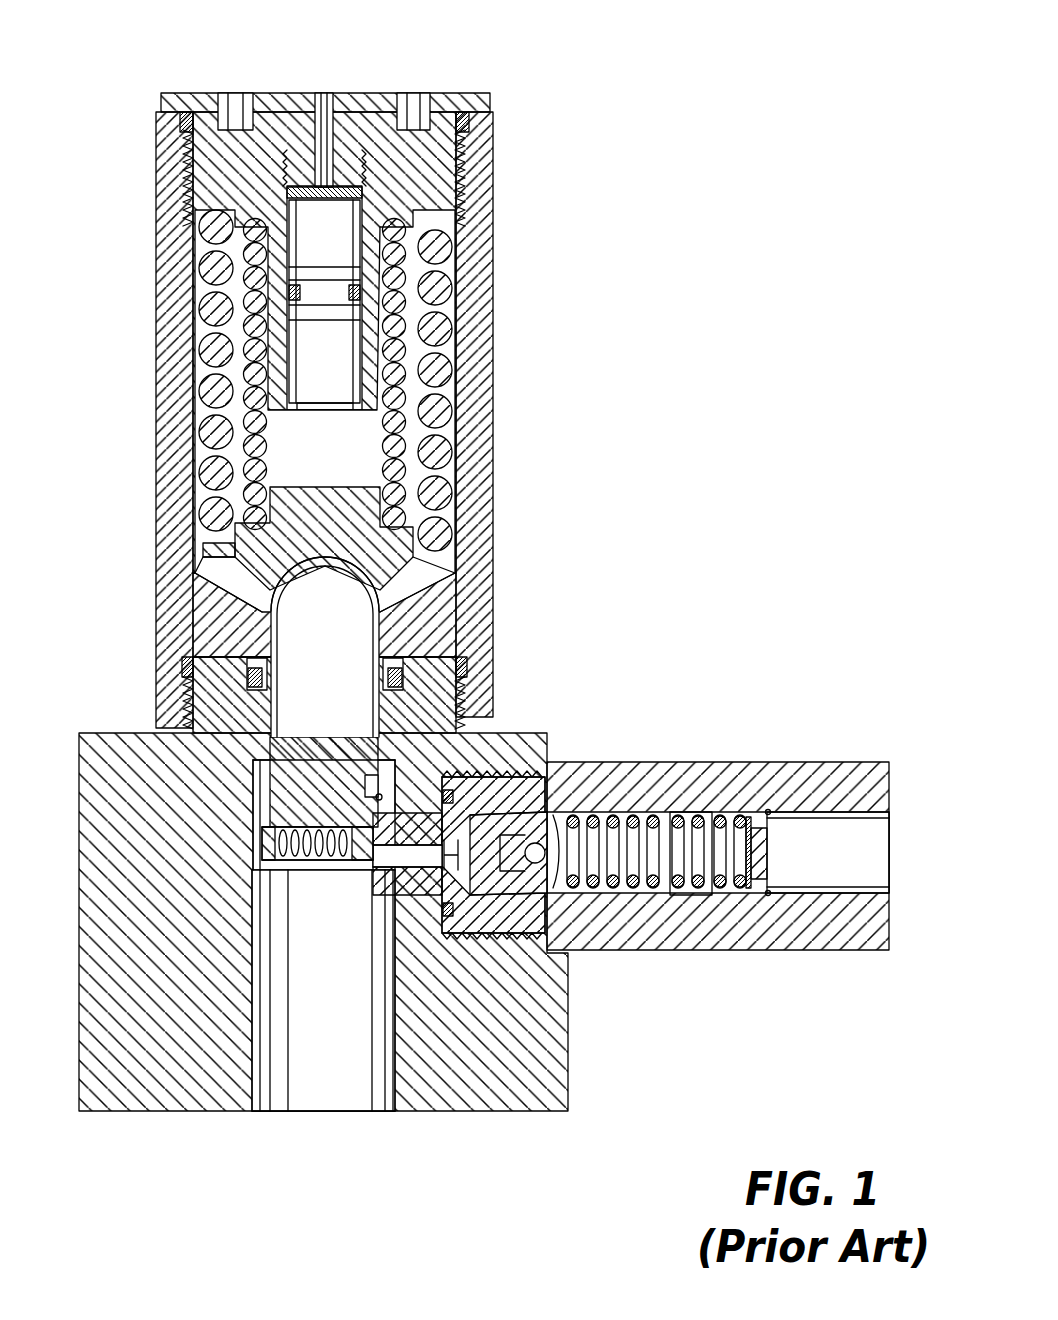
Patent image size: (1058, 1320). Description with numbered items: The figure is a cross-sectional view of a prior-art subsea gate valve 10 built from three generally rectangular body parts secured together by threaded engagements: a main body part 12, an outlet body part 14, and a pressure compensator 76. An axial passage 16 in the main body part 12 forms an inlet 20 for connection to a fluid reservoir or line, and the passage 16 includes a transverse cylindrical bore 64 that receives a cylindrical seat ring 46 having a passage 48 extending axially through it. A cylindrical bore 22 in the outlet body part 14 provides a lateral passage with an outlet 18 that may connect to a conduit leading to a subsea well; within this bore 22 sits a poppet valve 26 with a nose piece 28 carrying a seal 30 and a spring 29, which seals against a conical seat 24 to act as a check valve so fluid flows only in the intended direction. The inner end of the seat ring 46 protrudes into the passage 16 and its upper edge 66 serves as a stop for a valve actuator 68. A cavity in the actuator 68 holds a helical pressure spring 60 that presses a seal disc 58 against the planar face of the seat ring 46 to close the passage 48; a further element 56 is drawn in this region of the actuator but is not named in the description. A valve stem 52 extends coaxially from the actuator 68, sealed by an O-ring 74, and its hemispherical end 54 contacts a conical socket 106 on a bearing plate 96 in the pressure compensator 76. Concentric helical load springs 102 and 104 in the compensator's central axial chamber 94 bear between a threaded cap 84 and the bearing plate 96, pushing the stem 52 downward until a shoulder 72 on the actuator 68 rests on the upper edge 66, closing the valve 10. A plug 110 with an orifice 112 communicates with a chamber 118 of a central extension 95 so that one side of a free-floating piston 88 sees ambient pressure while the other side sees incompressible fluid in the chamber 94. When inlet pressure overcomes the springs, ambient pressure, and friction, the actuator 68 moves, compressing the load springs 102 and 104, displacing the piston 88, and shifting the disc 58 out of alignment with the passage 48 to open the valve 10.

The gate valve 10 is at (290, 62).
The main body part 12 is at (88, 985).
The outlet body part 14 is at (818, 952).
The axial passage 16 is at (253, 1080).
The outlet 18 is at (897, 858).
The inlet 20 is at (347, 1118).
The cylindrical bore 22 is at (853, 822).
The conical seat 24 is at (445, 815).
The poppet valve 26 is at (612, 800).
The nose piece 28 is at (530, 866).
The spring 29 is at (672, 896).
The seal 30 is at (505, 733).
The seat ring 46 is at (395, 905).
The passage 48 is at (390, 860).
The valve stem 52 is at (283, 617).
The hemispherical end 54 is at (353, 567).
The piston spring 56 is at (308, 827).
The seal disc 58 is at (372, 860).
The helical pressure spring 60 is at (260, 858).
The transverse cylindrical bore 64 is at (390, 965).
The upper edge 66 is at (370, 792).
The valve actuator 68 is at (265, 820).
The shoulder 72 is at (380, 797).
The O-ring 74 is at (402, 683).
The pressure compensator 76 is at (135, 452).
The threaded cap 84 is at (448, 192).
The free-floating piston 88 is at (353, 312).
The central axial chamber 94 is at (388, 455).
The central extension 95 is at (405, 350).
The bearing plate 96 is at (367, 502).
The load spring 102 is at (215, 262).
The load spring 104 is at (212, 310).
The conical socket 106 is at (378, 593).
The plug 110 is at (358, 93).
The orifice 112 is at (325, 160).
The chamber 118 is at (347, 238).